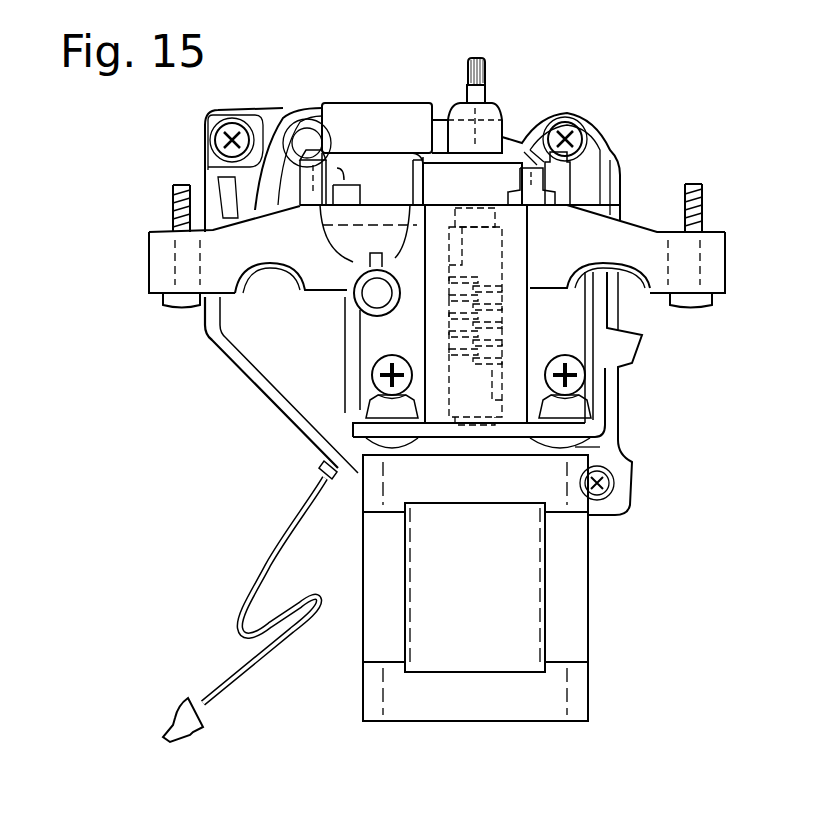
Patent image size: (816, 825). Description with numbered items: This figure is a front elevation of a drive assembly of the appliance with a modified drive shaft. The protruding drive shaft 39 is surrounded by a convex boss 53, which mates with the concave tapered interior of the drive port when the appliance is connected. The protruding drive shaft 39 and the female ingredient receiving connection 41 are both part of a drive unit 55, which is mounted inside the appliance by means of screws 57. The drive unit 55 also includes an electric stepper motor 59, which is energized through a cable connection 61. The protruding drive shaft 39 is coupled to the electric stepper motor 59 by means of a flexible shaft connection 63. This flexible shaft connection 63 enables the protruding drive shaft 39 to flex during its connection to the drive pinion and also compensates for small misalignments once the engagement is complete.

The protruding drive shaft 39 is at (472, 70).
The female ingredient receiving connection 41 is at (353, 123).
The convex boss 53 is at (497, 113).
The drive unit 55 is at (664, 430).
The screws 57 is at (175, 183).
The electric stepper motor 59 is at (520, 592).
The cable connection 61 is at (230, 682).
The flexible shaft connection 63 is at (503, 298).